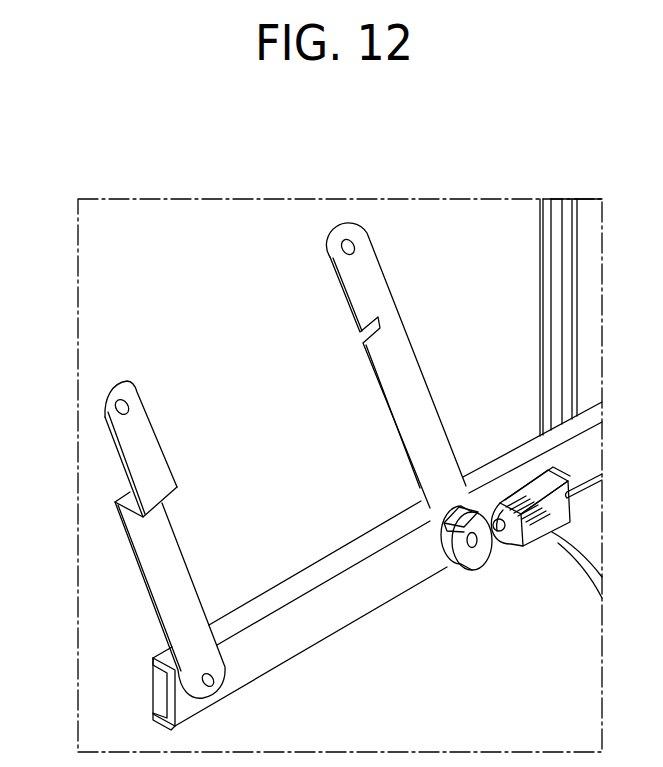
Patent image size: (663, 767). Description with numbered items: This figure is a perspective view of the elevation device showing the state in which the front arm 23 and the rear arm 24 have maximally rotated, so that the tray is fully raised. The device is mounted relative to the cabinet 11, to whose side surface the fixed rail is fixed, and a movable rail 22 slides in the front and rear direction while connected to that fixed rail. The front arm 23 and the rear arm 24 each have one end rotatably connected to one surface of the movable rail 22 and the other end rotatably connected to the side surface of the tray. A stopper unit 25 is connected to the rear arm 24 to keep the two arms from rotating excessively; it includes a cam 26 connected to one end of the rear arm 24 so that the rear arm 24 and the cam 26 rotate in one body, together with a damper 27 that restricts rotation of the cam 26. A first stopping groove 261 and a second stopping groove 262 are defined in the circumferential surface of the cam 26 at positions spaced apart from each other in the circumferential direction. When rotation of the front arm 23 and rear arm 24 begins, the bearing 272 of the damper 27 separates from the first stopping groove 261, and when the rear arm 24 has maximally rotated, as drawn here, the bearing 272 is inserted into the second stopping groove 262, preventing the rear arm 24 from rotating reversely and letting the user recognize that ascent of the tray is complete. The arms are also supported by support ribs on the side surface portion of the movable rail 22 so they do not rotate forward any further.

The cabinet 11 is at (547, 245).
The movable rail 22 is at (303, 583).
The front arm 23 is at (155, 568).
The rear arm 24 is at (352, 232).
The stopper unit 25 is at (455, 526).
The cam 26 is at (416, 515).
The damper 27 is at (530, 507).
The first stopping groove 261 is at (452, 508).
The second stopping groove 262 is at (480, 510).
The bearing 272 is at (497, 508).